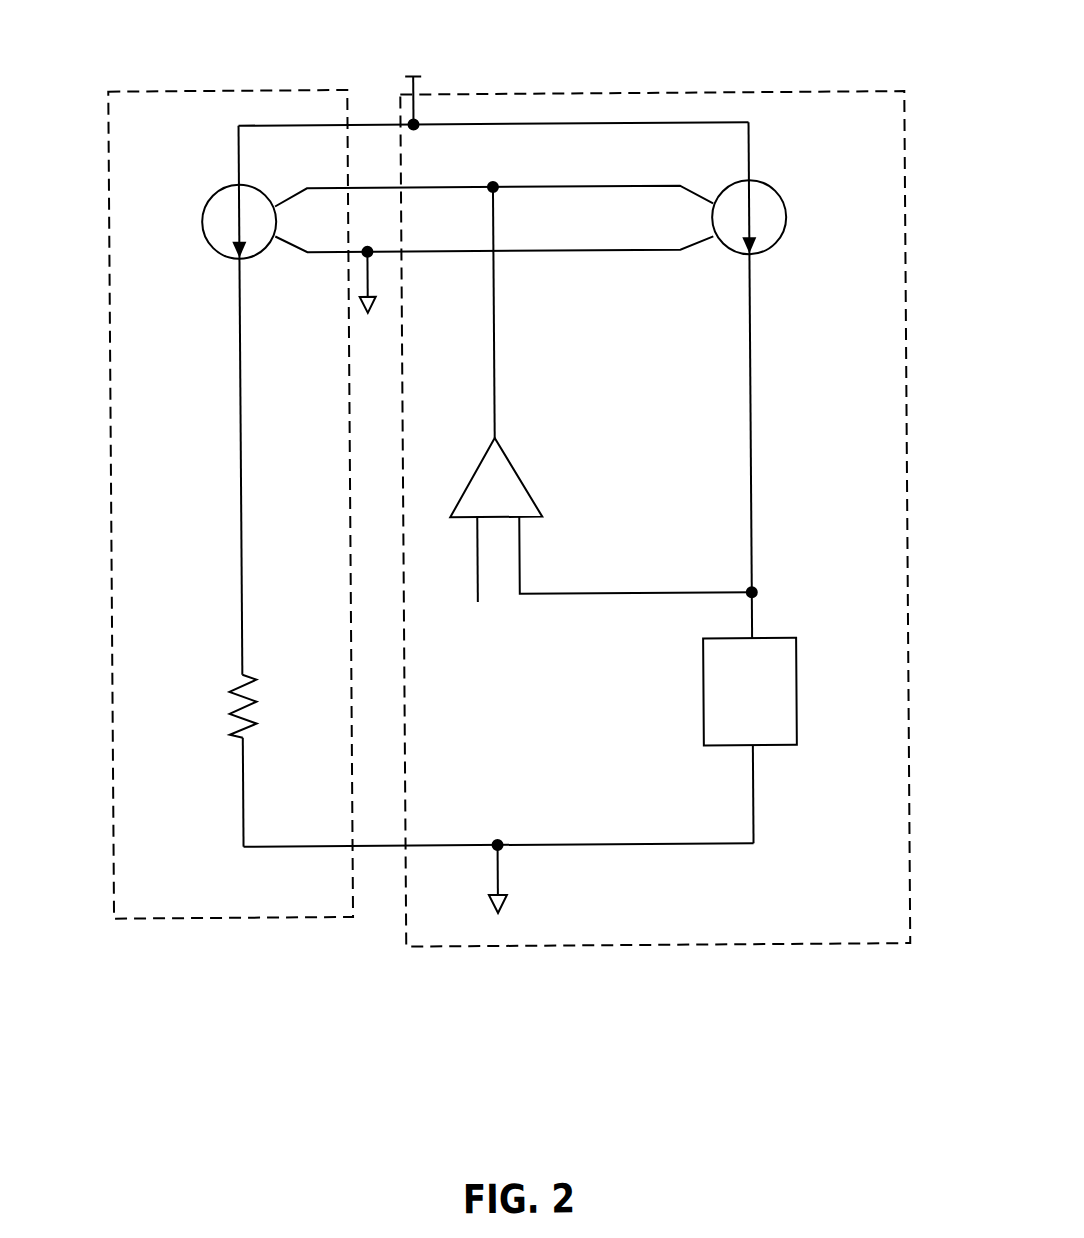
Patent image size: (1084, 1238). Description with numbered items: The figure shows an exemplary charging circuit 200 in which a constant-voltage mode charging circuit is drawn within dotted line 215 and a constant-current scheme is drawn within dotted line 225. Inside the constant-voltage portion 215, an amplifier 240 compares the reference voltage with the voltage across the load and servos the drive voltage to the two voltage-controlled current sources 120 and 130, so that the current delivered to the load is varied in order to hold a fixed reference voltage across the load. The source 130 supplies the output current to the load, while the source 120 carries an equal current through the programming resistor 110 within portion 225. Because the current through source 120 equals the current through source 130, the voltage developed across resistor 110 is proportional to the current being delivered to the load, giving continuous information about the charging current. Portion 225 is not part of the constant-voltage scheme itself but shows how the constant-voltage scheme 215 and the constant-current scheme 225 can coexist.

The current-mode driver circuit 200 is at (503, 58).
The dotted line portion 225 is at (200, 917).
The dotted line 215 is at (762, 946).
The voltage-controlled current source 120 is at (214, 248).
The voltage-controlled current source 130 is at (778, 245).
The programming resistor 110 is at (229, 703).
The amplifier 240 is at (520, 473).